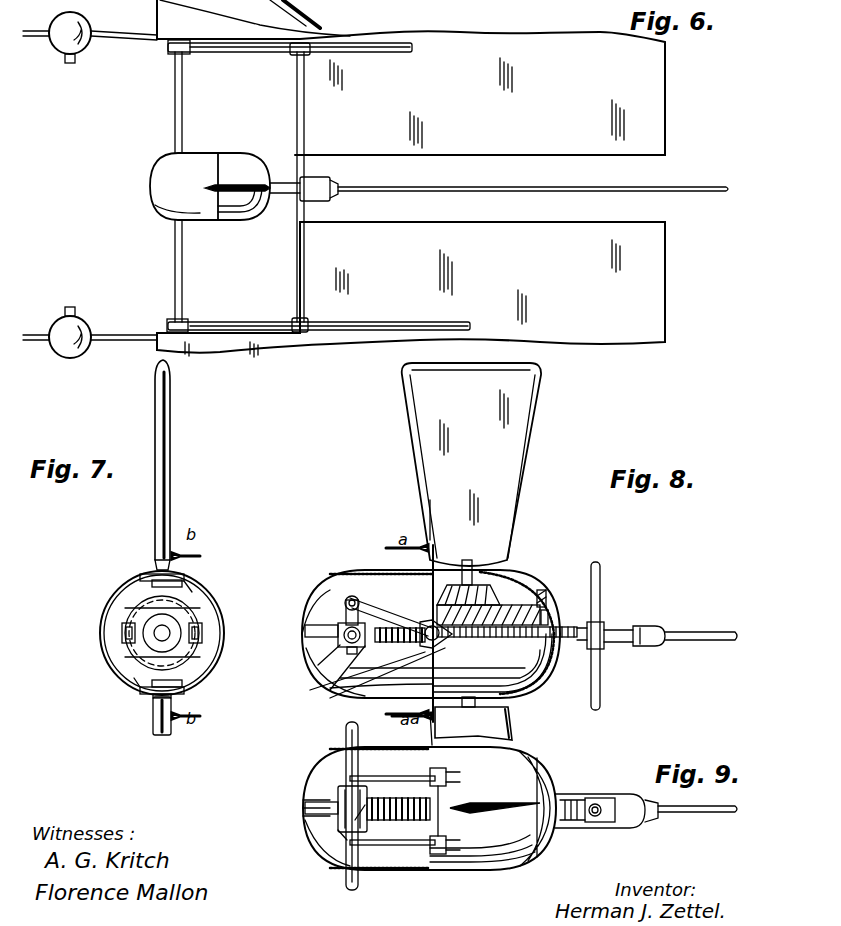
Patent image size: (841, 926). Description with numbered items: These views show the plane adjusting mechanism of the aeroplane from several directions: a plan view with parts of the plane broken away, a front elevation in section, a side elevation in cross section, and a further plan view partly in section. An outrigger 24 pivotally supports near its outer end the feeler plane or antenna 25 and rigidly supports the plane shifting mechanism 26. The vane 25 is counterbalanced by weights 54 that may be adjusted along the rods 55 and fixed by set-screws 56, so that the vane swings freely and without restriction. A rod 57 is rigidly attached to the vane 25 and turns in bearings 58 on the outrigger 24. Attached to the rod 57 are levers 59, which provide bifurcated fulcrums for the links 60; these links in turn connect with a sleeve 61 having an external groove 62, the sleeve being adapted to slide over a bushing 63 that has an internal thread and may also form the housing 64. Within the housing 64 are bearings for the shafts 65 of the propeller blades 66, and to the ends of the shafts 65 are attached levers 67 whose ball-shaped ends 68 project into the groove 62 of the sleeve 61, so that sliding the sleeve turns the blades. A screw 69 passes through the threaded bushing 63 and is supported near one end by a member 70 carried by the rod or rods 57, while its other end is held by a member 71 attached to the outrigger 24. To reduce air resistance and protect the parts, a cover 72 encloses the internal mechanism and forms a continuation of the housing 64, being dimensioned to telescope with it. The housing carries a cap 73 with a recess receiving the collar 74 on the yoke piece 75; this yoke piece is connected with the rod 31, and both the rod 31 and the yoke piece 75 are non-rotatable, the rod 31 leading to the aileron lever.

In FIG. 6, the outrigger 24 is at (305, 22).
In FIG. 6, the feeler plane 25 is at (495, 45).
In FIG. 6, the plane shifting mechanism 26 is at (165, 180).
In FIG. 6, the rod 31 is at (662, 190).
In FIG. 8, the rod 31 is at (696, 634).
In FIG. 9, the rod 31 is at (697, 825).
In FIG. 6, the weights 54 is at (60, 46).
In FIG. 6, the rods 55 is at (140, 38).
In FIG. 6, the set-screws 56 is at (68, 64).
In FIG. 6, the rod 57 is at (184, 78).
In FIG. 8, the rod 57 is at (336, 648).
In FIG. 9, the rod 57 is at (346, 732).
In FIG. 6, the bearings 58 is at (176, 52).
In FIG. 8, the levers 59 is at (346, 630).
In FIG. 9, the levers 59 is at (340, 822).
In FIG. 7, the links 60 is at (124, 637).
In FIG. 8, the links 60 is at (376, 612).
In FIG. 9, the links 60 is at (384, 776).
In FIG. 7, the sleeve 61 is at (198, 610).
In FIG. 8, the sleeve 61 is at (432, 622).
In FIG. 9, the sleeve 61 is at (438, 856).
In FIG. 8, the external groove 62 is at (492, 582).
In FIG. 7, the bushing 63 is at (176, 640).
In FIG. 8, the bushing 63 is at (543, 592).
In FIG. 8, the housing 64 is at (524, 578).
In FIG. 9, the housing 64 is at (515, 852).
In FIG. 7, the propeller shafts 65 is at (176, 566).
In FIG. 8, the propeller shafts 65 is at (476, 702).
In FIG. 6, the propeller blades 66 is at (236, 186).
In FIG. 7, the propeller blades 66 is at (176, 457).
In FIG. 8, the propeller blades 66 is at (515, 470).
In FIG. 9, the propeller blades 66 is at (512, 804).
In FIG. 7, the levers 67 is at (182, 577).
In FIG. 7, the ball-shaped ends 68 is at (205, 583).
In FIG. 8, the screw 69 is at (364, 648).
In FIG. 9, the screw 69 is at (375, 816).
In FIG. 8, the supporting member 70 is at (326, 637).
In FIG. 9, the supporting member 70 is at (335, 808).
In FIG. 6, the member 71 is at (318, 180).
In FIG. 8, the member 71 is at (600, 632).
In FIG. 9, the member 71 is at (606, 796).
In FIG. 8, the cover 72 is at (348, 576).
In FIG. 9, the cover 72 is at (330, 858).
In FIG. 8, the cap 73 is at (556, 612).
In FIG. 8, the collar 74 is at (549, 618).
In FIG. 8, the yoke piece 75 is at (648, 634).
In FIG. 9, the yoke piece 75 is at (640, 826).